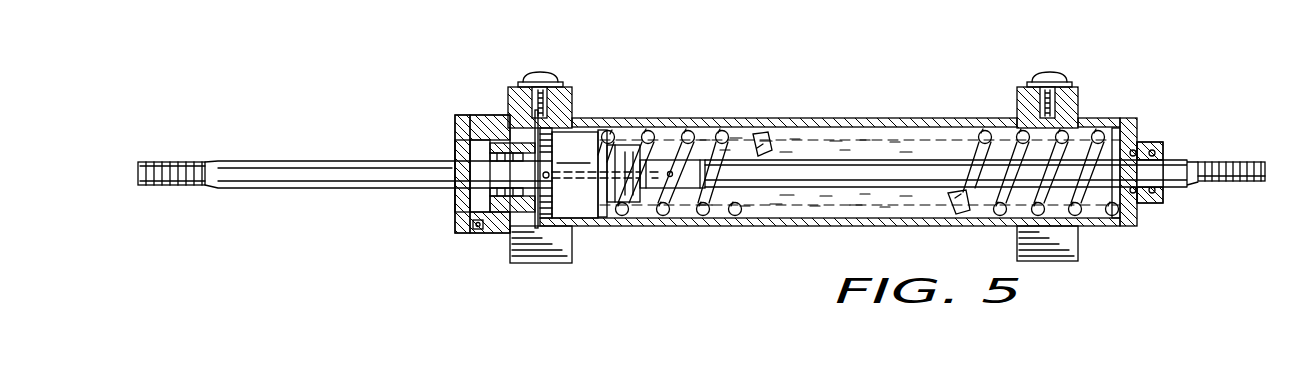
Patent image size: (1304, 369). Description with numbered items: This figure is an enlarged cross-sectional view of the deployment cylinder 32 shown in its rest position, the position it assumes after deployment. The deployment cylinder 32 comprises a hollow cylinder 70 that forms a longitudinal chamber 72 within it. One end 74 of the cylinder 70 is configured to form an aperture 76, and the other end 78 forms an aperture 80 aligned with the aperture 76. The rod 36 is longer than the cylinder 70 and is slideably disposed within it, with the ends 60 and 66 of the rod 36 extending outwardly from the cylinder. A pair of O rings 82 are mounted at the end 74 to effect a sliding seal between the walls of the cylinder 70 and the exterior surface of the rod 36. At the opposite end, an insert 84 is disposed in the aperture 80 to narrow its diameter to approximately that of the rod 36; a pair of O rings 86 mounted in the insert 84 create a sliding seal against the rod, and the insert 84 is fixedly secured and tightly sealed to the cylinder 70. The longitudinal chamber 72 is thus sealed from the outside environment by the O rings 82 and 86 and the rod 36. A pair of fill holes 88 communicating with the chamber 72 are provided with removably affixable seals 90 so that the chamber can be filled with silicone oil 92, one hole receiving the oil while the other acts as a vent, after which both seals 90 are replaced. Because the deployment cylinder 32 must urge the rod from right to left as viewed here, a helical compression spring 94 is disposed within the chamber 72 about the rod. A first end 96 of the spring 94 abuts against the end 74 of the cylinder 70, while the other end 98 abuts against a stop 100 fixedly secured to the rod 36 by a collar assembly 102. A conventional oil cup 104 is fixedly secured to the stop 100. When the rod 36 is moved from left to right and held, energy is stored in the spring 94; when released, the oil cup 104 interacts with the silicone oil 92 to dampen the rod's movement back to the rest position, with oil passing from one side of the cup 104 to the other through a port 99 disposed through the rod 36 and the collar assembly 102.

The deployment cylinder 32 is at (874, 115).
The rod 36 is at (246, 150).
The end of rod 60 is at (1237, 162).
The end of rod 66 is at (178, 161).
The hollow cylinder 70 is at (930, 122).
The longitudinal chamber 72 is at (800, 131).
The end of cylinder 74 is at (1130, 220).
The aperture 76 is at (1168, 182).
The other end of cylinder 78 is at (457, 233).
The aperture 80 is at (455, 128).
The O rings 82 is at (1160, 153).
The insert 84 is at (457, 217).
The O rings 86 is at (500, 200).
The fill holes 88 is at (545, 103).
The seals 90 is at (545, 73).
The silicone oil 92 is at (835, 213).
The helical compression spring 94 is at (965, 137).
The first end of spring 96 is at (1118, 138).
The other end of spring 98 is at (614, 133).
The port 99 is at (672, 174).
The stop 100 is at (591, 175).
The collar assembly 102 is at (688, 195).
The oil cup 104 is at (582, 173).